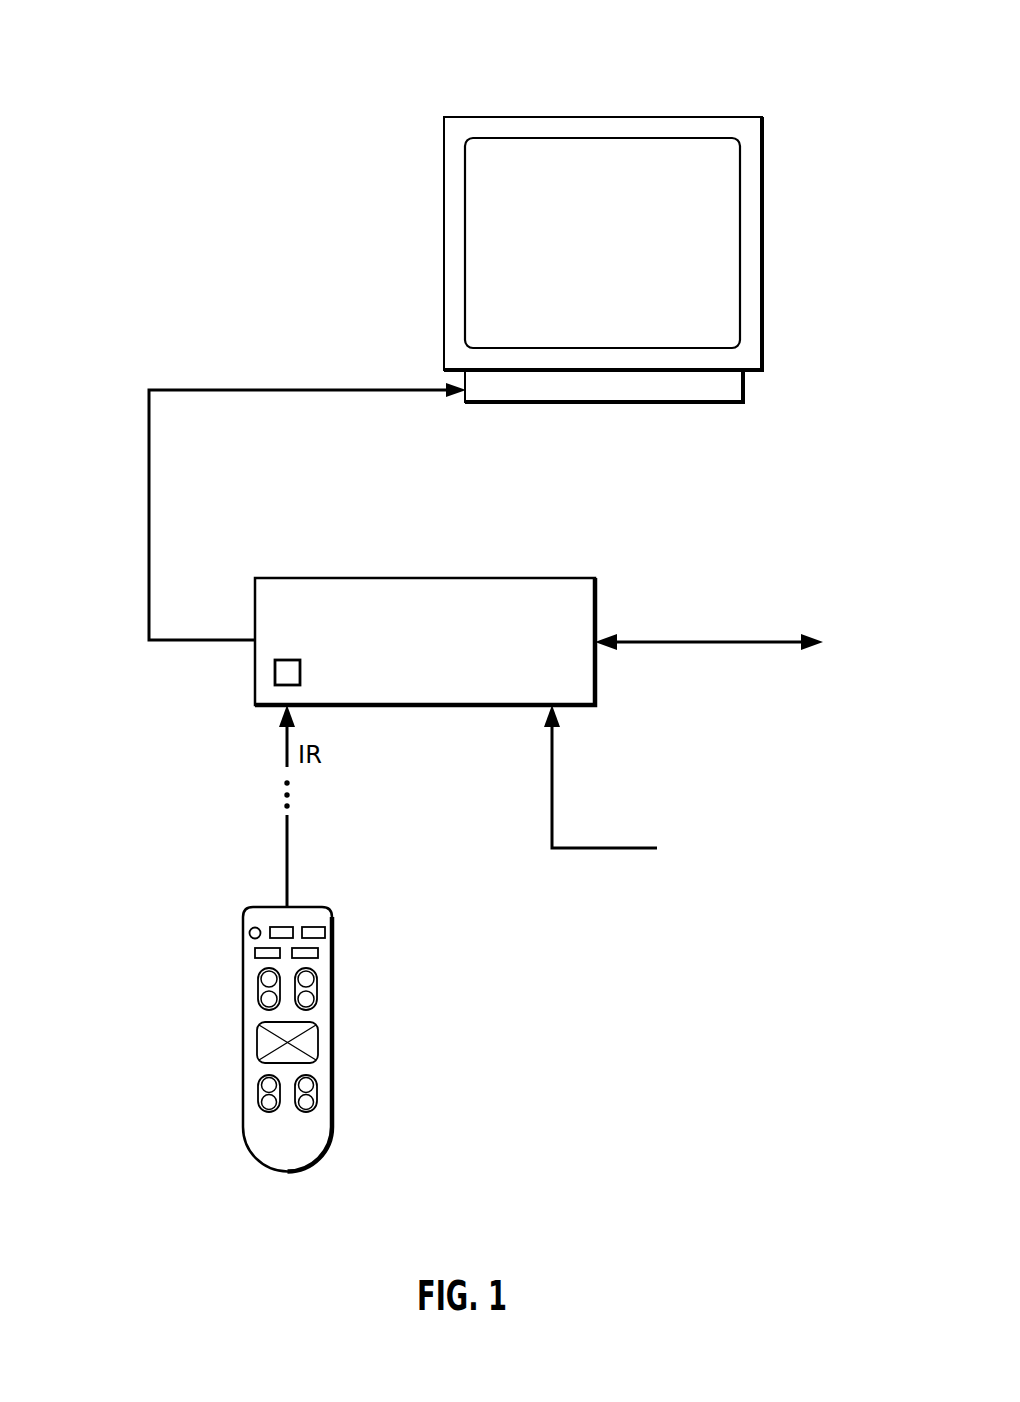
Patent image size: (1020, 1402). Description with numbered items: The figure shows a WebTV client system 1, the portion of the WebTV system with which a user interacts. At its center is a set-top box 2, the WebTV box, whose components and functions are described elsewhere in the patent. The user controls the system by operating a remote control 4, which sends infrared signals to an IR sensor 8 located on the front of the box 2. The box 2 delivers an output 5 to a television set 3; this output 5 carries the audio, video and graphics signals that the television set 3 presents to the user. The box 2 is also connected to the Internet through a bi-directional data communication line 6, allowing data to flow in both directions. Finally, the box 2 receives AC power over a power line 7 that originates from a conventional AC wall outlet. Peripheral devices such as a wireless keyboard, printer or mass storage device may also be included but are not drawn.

The WebTV client system 1 is at (751, 70).
The set-top box 2 is at (597, 697).
The television set 3 is at (764, 373).
The remote control 4 is at (318, 1158).
The output 5 is at (149, 488).
The bi-directional data communication line 6 is at (668, 642).
The AC power line 7 is at (620, 850).
The IR sensor 8 is at (300, 668).